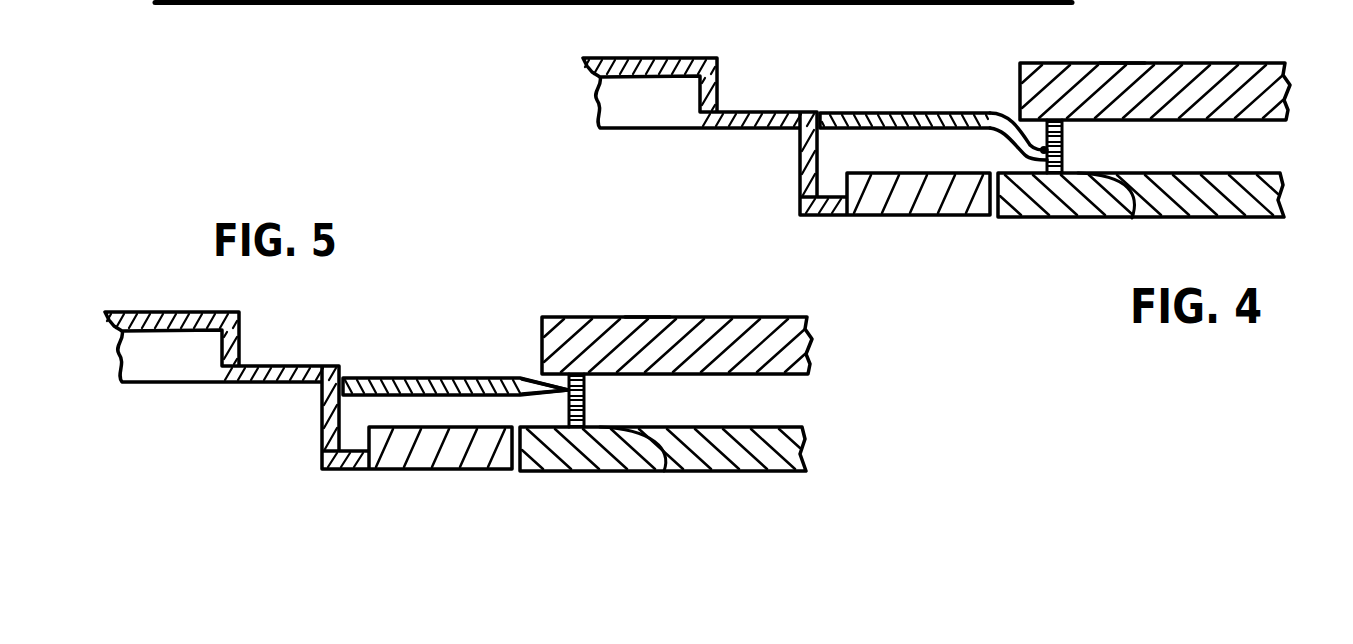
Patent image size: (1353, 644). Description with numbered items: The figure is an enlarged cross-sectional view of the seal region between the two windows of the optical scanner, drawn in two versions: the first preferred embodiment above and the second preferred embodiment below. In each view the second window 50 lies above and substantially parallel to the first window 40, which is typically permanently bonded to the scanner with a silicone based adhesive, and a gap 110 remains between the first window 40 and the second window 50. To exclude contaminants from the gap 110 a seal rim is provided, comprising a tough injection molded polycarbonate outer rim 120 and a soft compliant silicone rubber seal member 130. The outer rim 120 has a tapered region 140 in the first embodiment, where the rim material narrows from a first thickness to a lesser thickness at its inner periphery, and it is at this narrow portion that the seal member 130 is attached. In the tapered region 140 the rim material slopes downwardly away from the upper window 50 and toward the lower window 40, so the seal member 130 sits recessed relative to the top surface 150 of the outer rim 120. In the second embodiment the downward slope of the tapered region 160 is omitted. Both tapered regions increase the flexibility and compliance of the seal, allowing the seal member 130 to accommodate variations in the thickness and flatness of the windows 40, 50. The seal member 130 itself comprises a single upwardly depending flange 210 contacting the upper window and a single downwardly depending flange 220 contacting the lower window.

In FIG. 4, the first window 40 is at (1187, 218).
In FIG. 5, the first window 40 is at (768, 471).
In FIG. 4, the second window 50 is at (1207, 66).
In FIG. 5, the second window 50 is at (735, 316).
In FIG. 4, the gap 110 is at (1171, 143).
In FIG. 5, the gap 110 is at (697, 392).
In FIG. 4, the outer rim 120 is at (843, 113).
In FIG. 5, the outer rim 120 is at (380, 378).
In FIG. 4, the seal member 130 is at (1063, 150).
In FIG. 5, the seal member 130 is at (585, 400).
In FIG. 4, the tapered region 140 is at (1008, 100).
In FIG. 4, the top surface 150 is at (913, 113).
In FIG. 5, the top surface 150 is at (443, 378).
In FIG. 5, the tapered region 160 is at (524, 358).
In FIG. 4, the upwardly depending flange 210 is at (1120, 65).
In FIG. 5, the upwardly depending flange 210 is at (650, 316).
In FIG. 4, the downwardly depending flange 220 is at (1132, 219).
In FIG. 5, the downwardly depending flange 220 is at (664, 472).